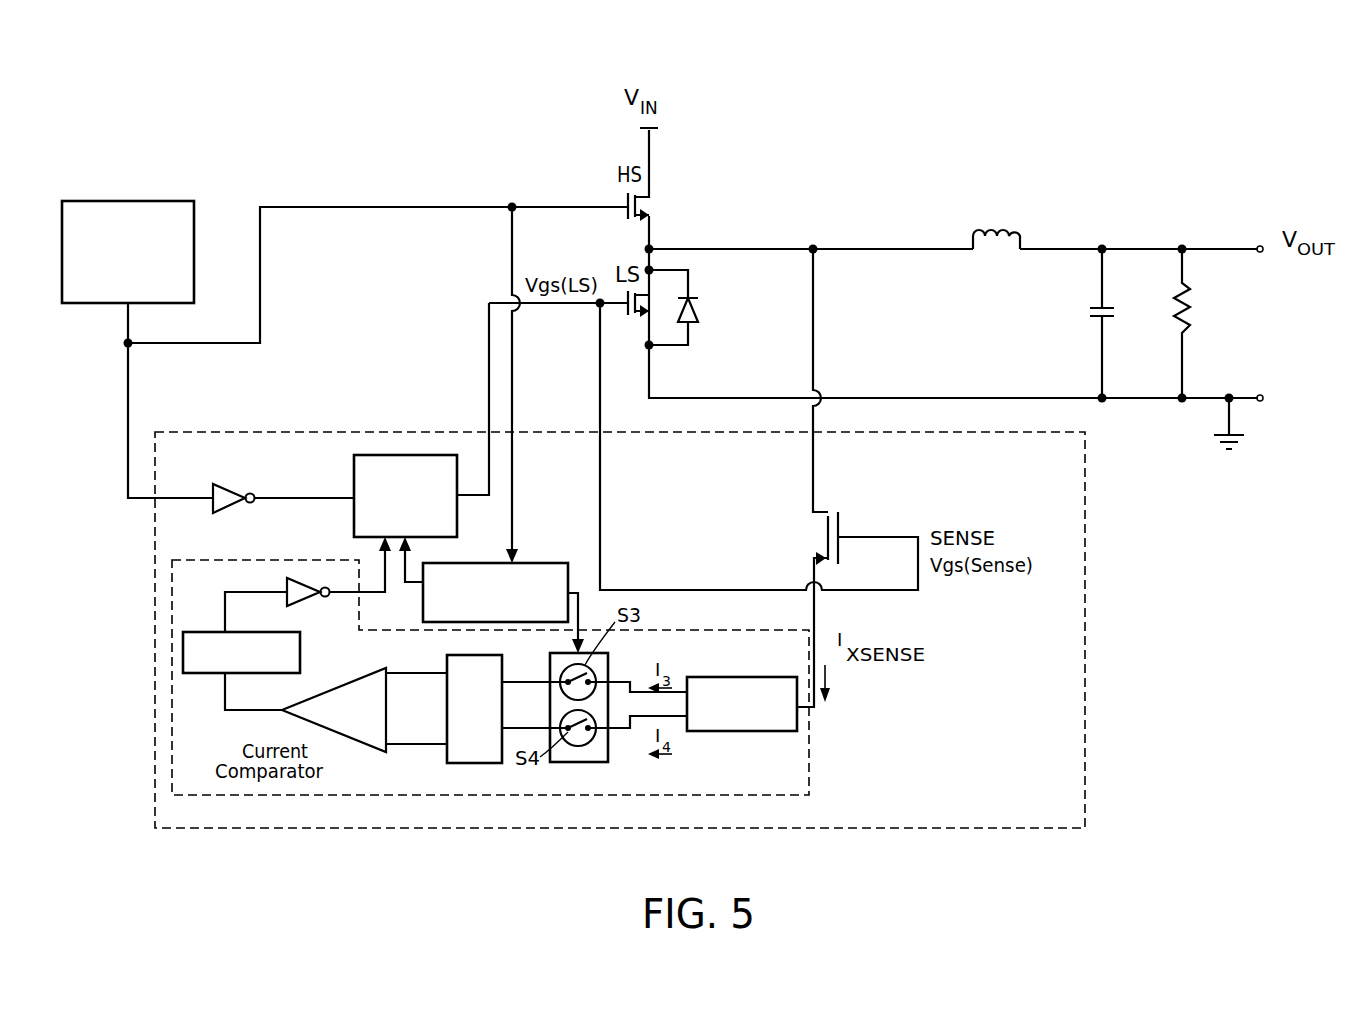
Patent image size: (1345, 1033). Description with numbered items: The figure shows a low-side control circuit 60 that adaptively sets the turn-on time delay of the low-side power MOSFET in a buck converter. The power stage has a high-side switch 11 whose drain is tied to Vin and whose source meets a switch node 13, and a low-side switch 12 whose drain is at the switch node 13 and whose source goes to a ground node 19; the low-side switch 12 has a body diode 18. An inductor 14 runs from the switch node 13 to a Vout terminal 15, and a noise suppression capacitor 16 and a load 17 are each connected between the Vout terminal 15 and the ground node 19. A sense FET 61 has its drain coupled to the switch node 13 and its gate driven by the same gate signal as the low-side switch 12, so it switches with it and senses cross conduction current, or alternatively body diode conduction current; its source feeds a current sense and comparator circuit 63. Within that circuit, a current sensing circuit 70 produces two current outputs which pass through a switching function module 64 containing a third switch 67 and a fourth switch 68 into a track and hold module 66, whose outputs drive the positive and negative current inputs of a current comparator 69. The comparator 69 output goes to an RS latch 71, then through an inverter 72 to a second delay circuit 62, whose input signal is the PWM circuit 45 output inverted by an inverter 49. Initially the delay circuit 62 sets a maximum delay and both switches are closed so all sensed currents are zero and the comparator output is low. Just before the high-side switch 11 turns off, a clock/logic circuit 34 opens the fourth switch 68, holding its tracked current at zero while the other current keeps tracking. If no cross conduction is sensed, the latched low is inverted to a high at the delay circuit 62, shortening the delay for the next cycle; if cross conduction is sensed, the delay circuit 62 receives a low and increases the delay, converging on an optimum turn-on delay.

The high-side switch 11 is at (626, 205).
The low-side switch 12 is at (631, 318).
The switch node 13 is at (653, 249).
The inductor 14 is at (1005, 229).
The Vout terminal 15 is at (1257, 245).
The noise suppression capacitor 16 is at (1097, 315).
The load 17 is at (1186, 311).
The body diode 18 is at (697, 313).
The ground node 19 is at (1232, 452).
The clock/logic circuit 34 is at (530, 563).
The PWM circuit 45 is at (138, 201).
The inverter 49 is at (210, 492).
The low-side control circuit 60 is at (1081, 612).
The sense FET 61 is at (826, 532).
The second delay circuit 62 is at (353, 486).
The current sense and comparator circuit 63 is at (808, 732).
The switching function module 64 is at (590, 764).
The track and hold module 66 is at (490, 764).
The switch S3 67 is at (562, 678).
The switch S4 68 is at (595, 735).
The current comparator 69 is at (388, 680).
The current sensing circuit 70 is at (707, 732).
The RS latch 71 is at (222, 674).
The inverter 72 is at (300, 598).